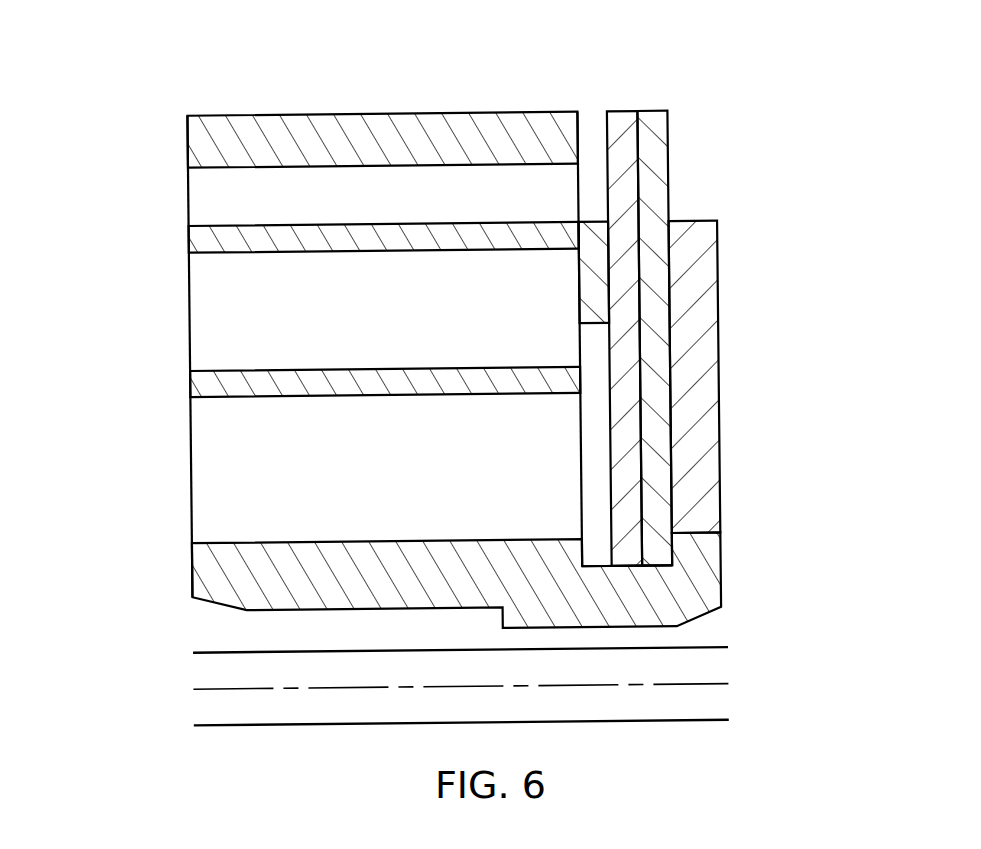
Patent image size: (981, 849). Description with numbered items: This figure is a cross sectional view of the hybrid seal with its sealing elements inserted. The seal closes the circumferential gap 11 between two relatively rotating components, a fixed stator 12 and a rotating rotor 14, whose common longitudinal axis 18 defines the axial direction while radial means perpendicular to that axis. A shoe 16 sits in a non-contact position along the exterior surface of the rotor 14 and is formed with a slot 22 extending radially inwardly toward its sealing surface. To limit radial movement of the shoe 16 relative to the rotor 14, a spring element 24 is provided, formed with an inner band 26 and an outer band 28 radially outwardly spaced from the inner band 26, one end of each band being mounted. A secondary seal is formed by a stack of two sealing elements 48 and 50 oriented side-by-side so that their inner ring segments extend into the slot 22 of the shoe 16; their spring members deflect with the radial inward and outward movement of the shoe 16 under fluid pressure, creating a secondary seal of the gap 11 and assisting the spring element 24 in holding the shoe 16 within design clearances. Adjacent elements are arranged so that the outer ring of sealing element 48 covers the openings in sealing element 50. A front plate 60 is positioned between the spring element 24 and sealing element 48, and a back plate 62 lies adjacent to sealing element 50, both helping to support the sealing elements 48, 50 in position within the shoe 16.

The spring element 24 is at (98, 103).
The stator 12 is at (471, 112).
The outer band 28 is at (190, 247).
The front plate 60 is at (605, 221).
The inner band 26 is at (190, 382).
The shoe 16 is at (193, 569).
The sealing element 48 is at (620, 112).
The sealing element 50 is at (669, 171).
The back plate 62 is at (720, 352).
The slot 22 is at (597, 558).
The circumferential gap 11 is at (683, 637).
The axis 18 is at (197, 690).
The rotor 14 is at (677, 723).